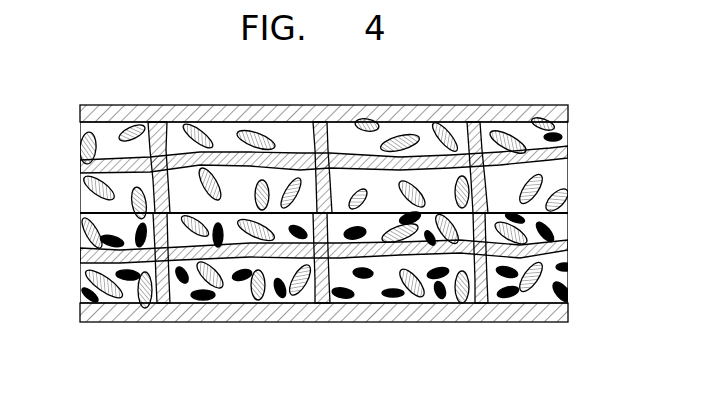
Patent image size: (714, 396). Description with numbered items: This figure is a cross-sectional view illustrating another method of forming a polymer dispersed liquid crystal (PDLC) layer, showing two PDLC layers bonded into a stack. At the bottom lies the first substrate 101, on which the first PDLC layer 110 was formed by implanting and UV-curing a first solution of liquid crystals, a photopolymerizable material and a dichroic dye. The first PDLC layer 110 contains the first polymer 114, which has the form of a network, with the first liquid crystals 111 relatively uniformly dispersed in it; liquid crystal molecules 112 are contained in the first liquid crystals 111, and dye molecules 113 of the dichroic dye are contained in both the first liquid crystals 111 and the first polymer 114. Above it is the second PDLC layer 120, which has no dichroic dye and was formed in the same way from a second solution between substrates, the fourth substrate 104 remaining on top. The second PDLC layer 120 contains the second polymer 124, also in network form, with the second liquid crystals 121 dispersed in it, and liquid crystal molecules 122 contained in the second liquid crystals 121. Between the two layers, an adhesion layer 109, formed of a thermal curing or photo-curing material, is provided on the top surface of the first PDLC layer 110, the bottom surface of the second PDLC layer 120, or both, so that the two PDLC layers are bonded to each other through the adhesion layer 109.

The first substrate 101 is at (568, 313).
The fourth substrate 104 is at (568, 113).
The adhesion layer 109 is at (568, 213).
The first PDLC layer 110 is at (321, 287).
The first liquid crystals 111 is at (560, 267).
The liquid crystal molecules 112 is at (528, 305).
The dye molecules 113 is at (568, 296).
The first polymer 114 is at (568, 247).
The second PDLC layer 120 is at (321, 167).
The second liquid crystals 121 is at (562, 137).
The liquid crystal molecules 122 is at (568, 198).
The second polymer 124 is at (568, 156).